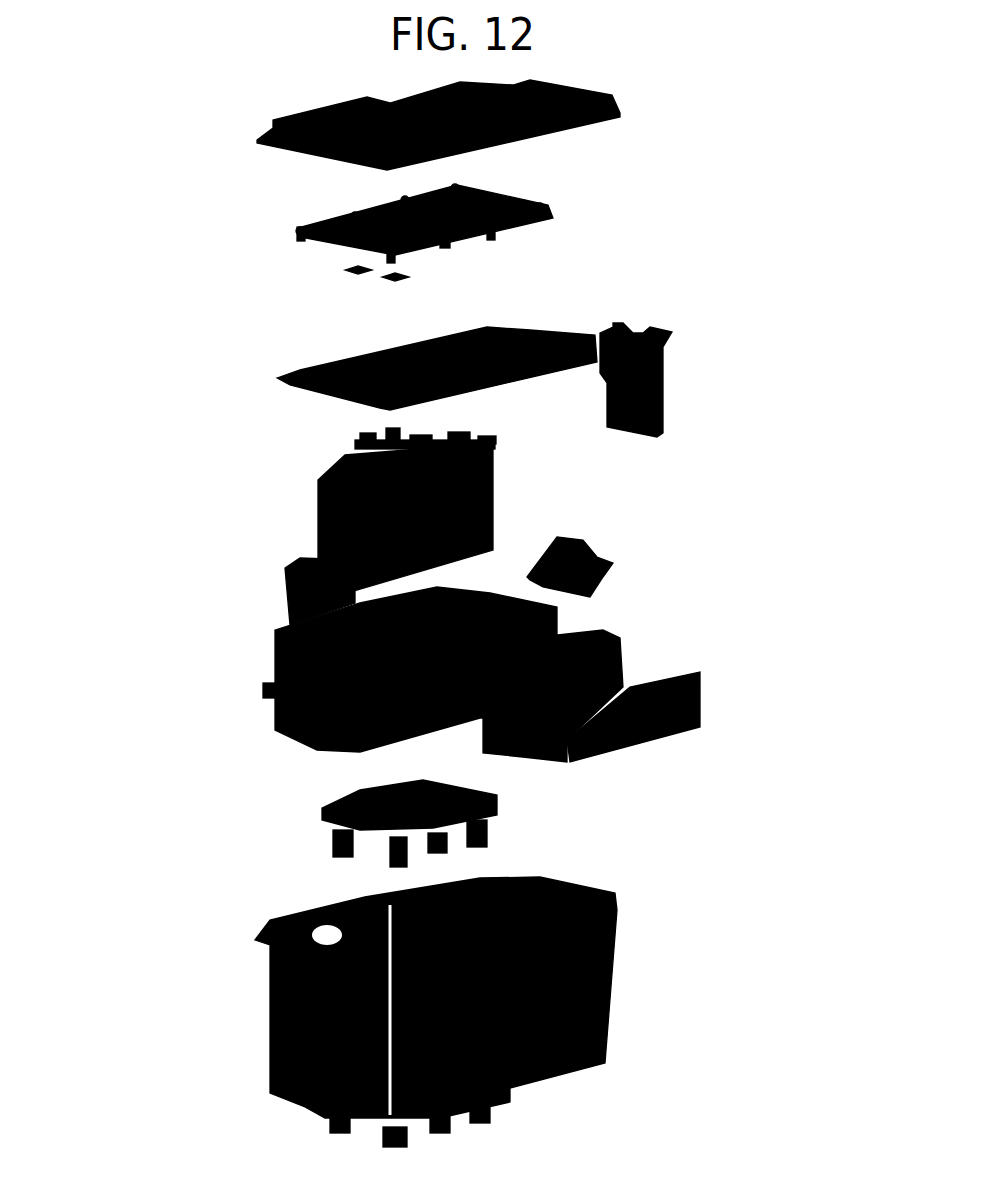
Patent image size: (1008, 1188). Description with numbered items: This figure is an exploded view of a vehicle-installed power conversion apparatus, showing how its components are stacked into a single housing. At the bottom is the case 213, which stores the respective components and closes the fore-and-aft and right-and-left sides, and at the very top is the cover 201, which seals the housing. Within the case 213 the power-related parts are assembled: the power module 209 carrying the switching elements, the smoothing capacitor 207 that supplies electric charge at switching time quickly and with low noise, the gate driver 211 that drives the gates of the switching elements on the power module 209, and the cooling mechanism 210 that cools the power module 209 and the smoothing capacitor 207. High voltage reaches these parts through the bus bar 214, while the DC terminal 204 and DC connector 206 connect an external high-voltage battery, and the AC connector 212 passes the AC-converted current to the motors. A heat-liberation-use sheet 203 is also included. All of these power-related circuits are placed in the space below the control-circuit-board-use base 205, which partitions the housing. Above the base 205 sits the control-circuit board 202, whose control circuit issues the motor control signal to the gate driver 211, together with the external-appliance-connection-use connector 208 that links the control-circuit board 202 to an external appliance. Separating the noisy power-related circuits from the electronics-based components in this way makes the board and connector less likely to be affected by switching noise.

The cover 201 is at (597, 118).
The control-circuit board 202 is at (590, 240).
The heat-liberation-use sheet 203 is at (343, 266).
The DC terminal 204 is at (667, 325).
The control-circuit-board-use base 205 is at (277, 383).
The DC connector 206 is at (600, 550).
The smoothing capacitor 207 is at (320, 503).
The external-appliance-connection-use connector 208 is at (290, 573).
The power module 209 is at (617, 640).
The cooling mechanism 210 is at (273, 658).
The gate driver 211 is at (700, 690).
The AC connector 212 is at (320, 807).
The case 213 is at (257, 948).
The bus bar 214 is at (357, 447).